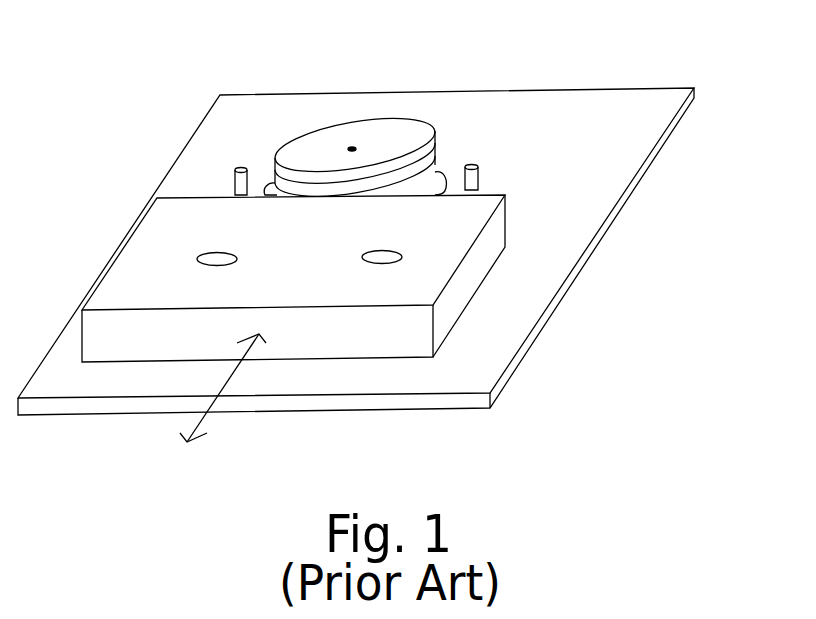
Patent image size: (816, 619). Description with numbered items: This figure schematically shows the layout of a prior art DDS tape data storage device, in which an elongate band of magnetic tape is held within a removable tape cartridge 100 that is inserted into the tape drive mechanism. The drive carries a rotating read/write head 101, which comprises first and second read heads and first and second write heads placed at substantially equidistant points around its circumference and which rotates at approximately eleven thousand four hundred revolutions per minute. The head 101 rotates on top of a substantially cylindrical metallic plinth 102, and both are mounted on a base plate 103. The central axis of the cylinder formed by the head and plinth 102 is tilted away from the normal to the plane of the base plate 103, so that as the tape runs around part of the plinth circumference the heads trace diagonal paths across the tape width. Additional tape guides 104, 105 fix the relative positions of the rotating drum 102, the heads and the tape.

The removable tape cartridge 100 is at (341, 297).
The rotating read/write head 101 is at (335, 130).
The cylindrical metallic plinth 102 is at (413, 167).
The base plate 103 is at (675, 120).
The tape guide 104 is at (233, 181).
The tape guide 105 is at (481, 175).